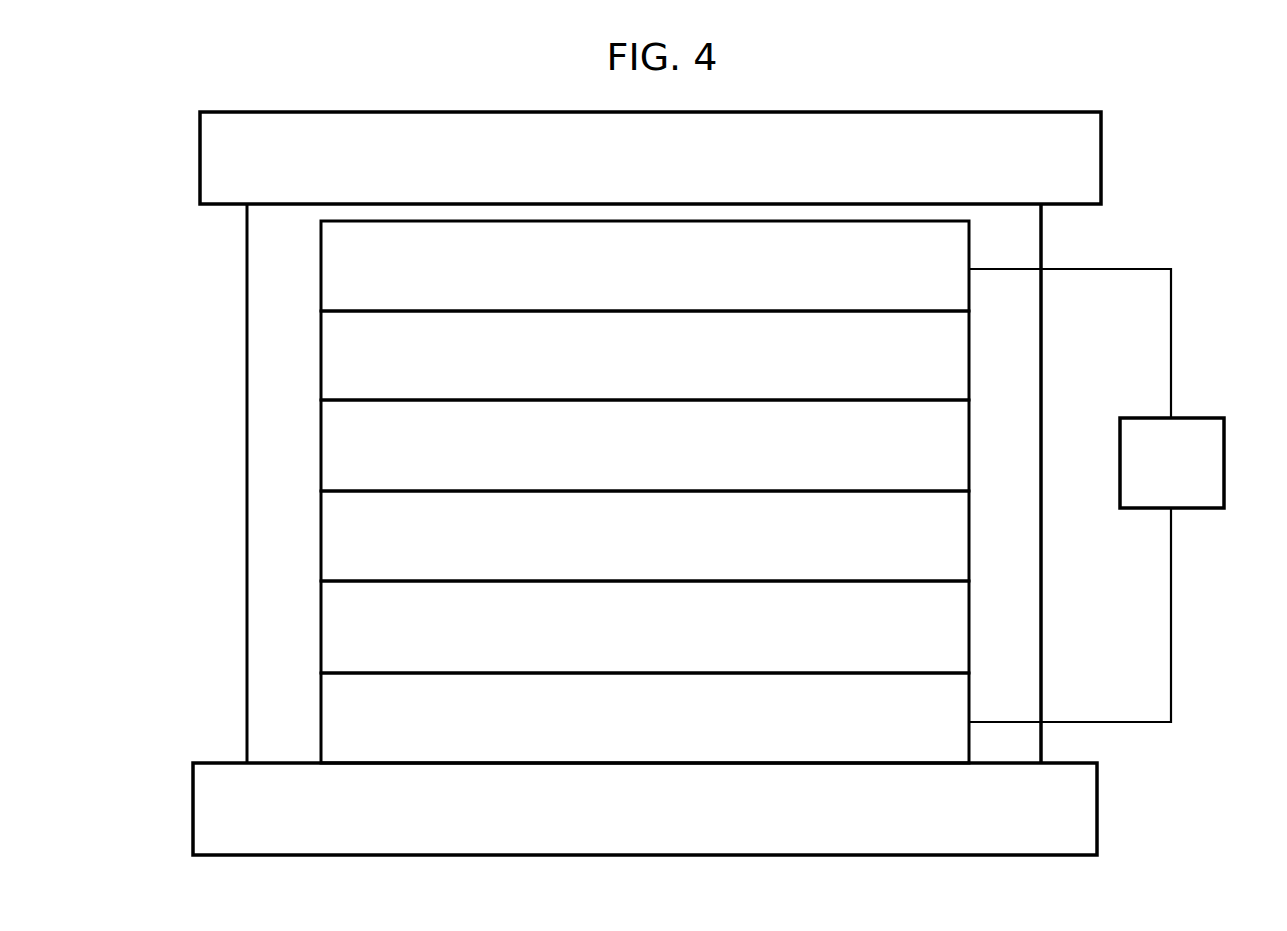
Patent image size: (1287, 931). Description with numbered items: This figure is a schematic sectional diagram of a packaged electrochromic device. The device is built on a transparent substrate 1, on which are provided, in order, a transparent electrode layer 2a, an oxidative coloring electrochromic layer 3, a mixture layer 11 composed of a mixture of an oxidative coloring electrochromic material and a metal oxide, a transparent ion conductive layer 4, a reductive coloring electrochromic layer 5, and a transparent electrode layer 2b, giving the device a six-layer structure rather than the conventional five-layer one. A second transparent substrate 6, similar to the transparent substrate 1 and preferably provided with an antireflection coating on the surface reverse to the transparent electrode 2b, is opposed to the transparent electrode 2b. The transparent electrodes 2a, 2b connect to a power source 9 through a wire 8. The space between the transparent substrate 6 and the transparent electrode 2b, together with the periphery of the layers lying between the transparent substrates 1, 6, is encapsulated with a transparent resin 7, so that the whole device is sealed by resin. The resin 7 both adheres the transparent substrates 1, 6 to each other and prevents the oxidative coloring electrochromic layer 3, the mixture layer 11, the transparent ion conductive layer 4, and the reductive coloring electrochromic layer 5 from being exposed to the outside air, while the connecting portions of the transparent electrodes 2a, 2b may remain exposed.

The transparent substrate 1 is at (1077, 823).
The transparent electrode layer 2a is at (358, 719).
The transparent electrode layer 2b is at (358, 270).
The oxidative coloring electrochromic layer 3 is at (358, 625).
The transparent ion conductive layer 4 is at (358, 450).
The reductive coloring electrochromic layer 5 is at (358, 360).
The transparent substrate 6 is at (1083, 143).
The transparent resin 7 is at (1017, 643).
The wire 8 is at (1120, 269).
The power source 9 is at (1200, 430).
The mixture layer 11 is at (358, 535).